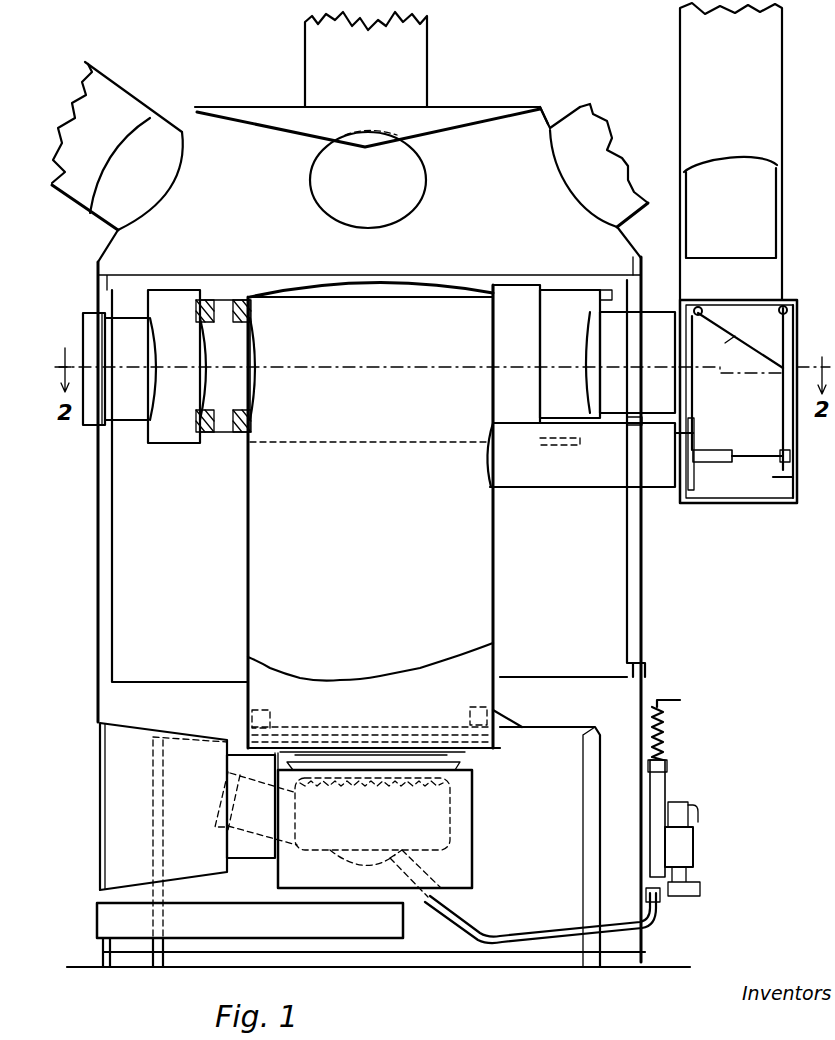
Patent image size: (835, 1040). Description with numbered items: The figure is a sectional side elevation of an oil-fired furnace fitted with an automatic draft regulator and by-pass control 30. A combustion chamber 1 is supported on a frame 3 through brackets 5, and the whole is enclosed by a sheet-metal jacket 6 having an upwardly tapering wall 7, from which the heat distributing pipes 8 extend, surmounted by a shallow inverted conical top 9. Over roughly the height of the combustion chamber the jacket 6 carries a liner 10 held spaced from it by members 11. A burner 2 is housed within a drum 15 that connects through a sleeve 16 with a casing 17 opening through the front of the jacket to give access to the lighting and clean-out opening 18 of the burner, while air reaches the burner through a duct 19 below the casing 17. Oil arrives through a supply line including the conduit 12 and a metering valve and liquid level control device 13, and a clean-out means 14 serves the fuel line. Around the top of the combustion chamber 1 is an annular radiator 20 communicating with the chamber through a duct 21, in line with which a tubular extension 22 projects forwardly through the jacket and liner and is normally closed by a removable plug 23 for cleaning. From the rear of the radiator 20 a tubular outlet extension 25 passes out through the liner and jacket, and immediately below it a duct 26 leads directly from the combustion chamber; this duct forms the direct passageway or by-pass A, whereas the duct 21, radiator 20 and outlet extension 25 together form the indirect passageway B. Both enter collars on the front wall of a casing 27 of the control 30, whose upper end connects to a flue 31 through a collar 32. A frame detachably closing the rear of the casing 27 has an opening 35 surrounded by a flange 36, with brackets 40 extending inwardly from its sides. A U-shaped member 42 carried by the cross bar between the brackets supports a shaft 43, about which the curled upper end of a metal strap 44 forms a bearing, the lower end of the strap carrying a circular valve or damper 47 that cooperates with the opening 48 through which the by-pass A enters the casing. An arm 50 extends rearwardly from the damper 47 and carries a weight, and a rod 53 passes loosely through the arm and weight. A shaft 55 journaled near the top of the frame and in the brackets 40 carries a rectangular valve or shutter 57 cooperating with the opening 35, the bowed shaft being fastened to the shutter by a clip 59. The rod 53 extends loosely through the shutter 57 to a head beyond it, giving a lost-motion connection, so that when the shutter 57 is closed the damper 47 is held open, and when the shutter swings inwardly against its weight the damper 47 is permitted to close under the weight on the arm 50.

The combustion chamber 1 is at (480, 578).
The burner 2 is at (450, 823).
The frame 3 is at (535, 730).
The brackets 5 is at (245, 726).
The jacket 6 is at (645, 550).
The upwardly tapering wall 7 is at (548, 122).
The heat distributing pipes 8 is at (115, 97).
The inverted conical top 9 is at (445, 120).
The liner 10 is at (112, 522).
The members 11 is at (650, 673).
The conduit 12 is at (495, 935).
The metering valve and liquid level control device 13 is at (693, 847).
The clean-out means 14 is at (668, 776).
The drum 15 is at (470, 868).
The sleeve 16 is at (237, 860).
The casing 17 is at (110, 745).
The lighting and clean-out opening 18 is at (215, 815).
The duct 19 is at (378, 935).
The annular radiator 20 is at (177, 300).
The duct 21 is at (225, 327).
The tubular extension 22 is at (128, 440).
The removable plug 23 is at (92, 322).
The tubular outlet extension 25 is at (612, 322).
The duct 26 is at (535, 490).
The casing 27 is at (733, 505).
The automatic draft regulator and by-pass control 30 is at (697, 503).
The flue 31 is at (731, 151).
The collar 32 is at (768, 258).
The opening 35 is at (803, 478).
The flange 36 is at (800, 338).
The brackets 40 is at (717, 347).
The U-shaped member 42 is at (707, 318).
The shaft 43 is at (702, 322).
The metal strap 44 is at (697, 385).
The circular valve or damper 47 is at (698, 486).
The opening 48 is at (697, 437).
The arm 50 is at (707, 452).
The rod 53 is at (770, 452).
The shaft 55 is at (778, 318).
The rectangular valve or shutter 57 is at (788, 402).
The clip 59 is at (780, 302).
The direct passageway or by-pass A is at (488, 468).
The indirect passageway B is at (173, 425).